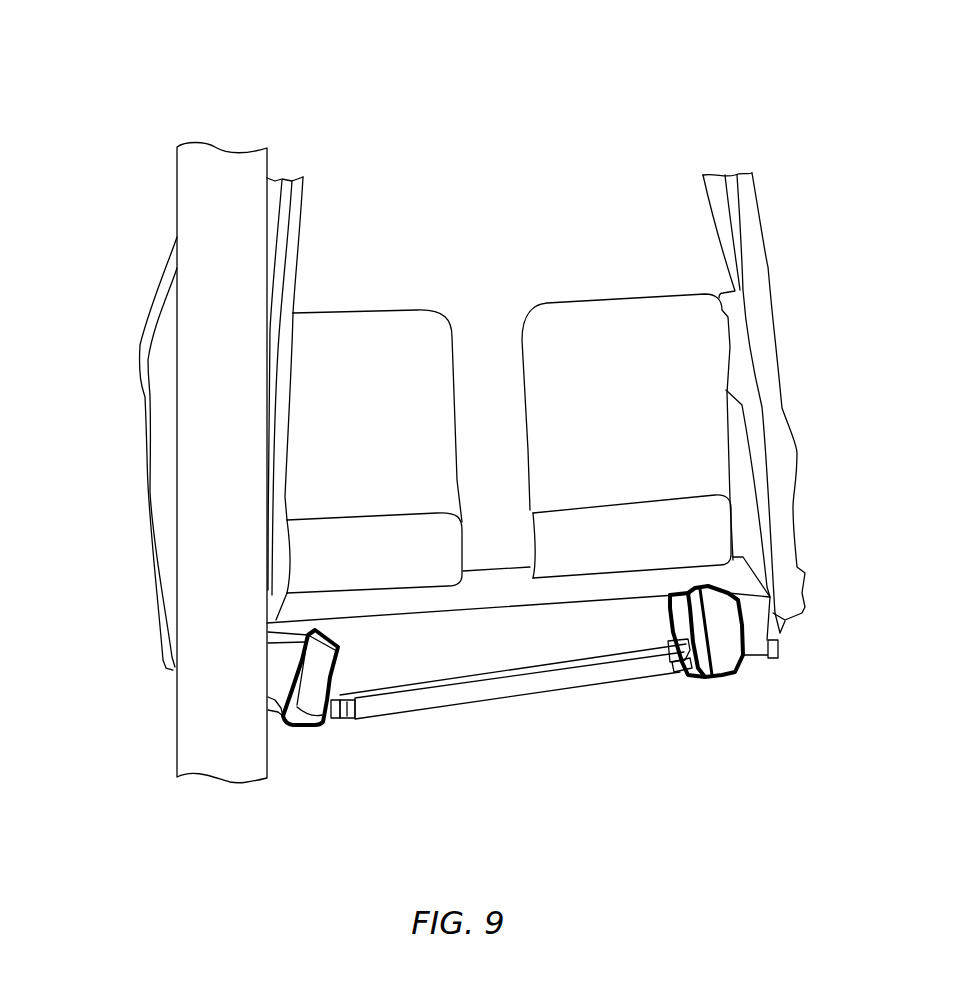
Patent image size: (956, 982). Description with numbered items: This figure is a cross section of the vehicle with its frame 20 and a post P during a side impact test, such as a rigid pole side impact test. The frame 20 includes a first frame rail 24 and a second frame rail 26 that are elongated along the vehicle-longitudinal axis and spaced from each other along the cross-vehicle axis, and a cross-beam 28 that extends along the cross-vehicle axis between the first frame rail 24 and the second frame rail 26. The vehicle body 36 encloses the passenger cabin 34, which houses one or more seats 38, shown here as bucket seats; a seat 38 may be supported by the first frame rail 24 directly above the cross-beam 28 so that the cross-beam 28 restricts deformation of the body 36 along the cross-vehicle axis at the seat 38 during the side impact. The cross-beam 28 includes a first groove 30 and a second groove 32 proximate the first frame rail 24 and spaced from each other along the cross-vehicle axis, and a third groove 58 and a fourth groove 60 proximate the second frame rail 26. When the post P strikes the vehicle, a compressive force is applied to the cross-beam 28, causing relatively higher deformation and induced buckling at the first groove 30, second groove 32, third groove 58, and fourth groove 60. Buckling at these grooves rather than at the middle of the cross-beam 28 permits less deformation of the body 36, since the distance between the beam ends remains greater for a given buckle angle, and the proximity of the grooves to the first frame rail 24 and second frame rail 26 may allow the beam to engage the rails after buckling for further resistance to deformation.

The post P is at (192, 714).
The frame 20 is at (232, 70).
The first frame rail 24 is at (307, 730).
The second frame rail 26 is at (733, 674).
The cross-beam 28 is at (553, 684).
The first groove 30 is at (338, 724).
The second groove 32 is at (355, 722).
The passenger cabin 34 is at (509, 381).
The body 36 is at (145, 398).
The seat 38 is at (381, 308).
The third groove 58 is at (683, 640).
The fourth groove 60 is at (678, 678).